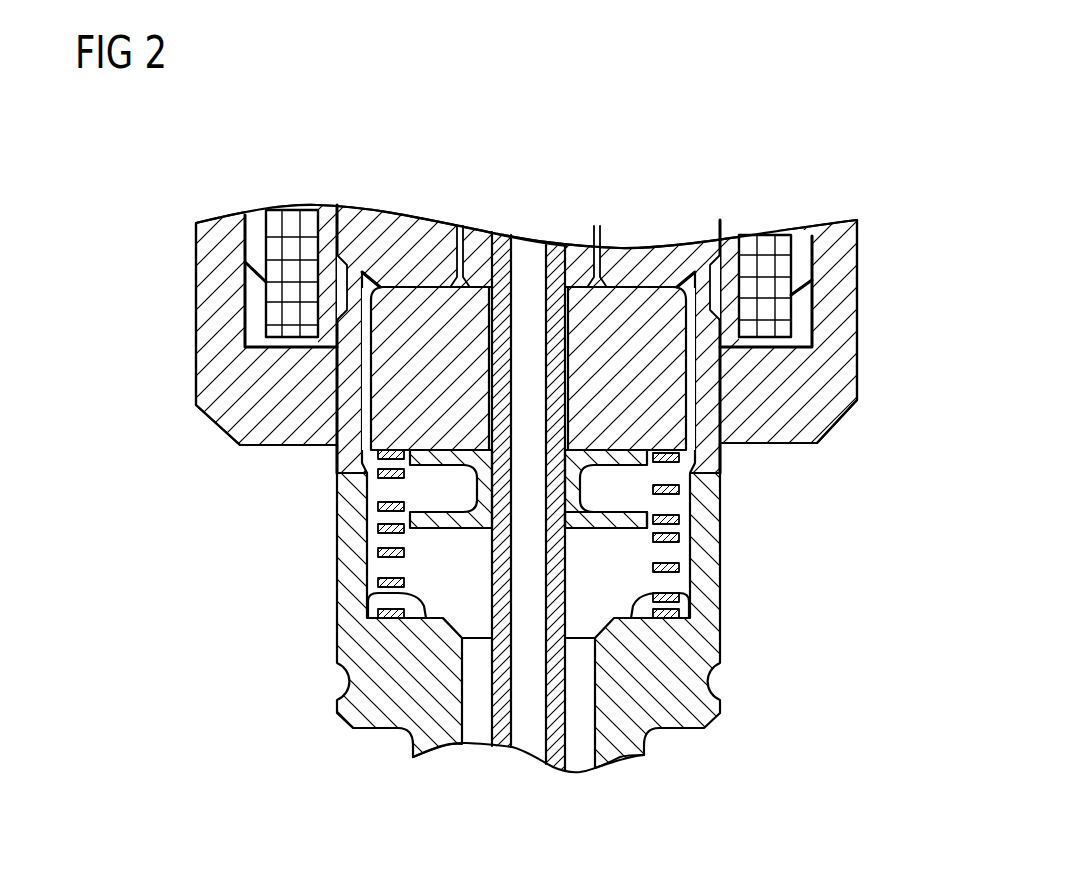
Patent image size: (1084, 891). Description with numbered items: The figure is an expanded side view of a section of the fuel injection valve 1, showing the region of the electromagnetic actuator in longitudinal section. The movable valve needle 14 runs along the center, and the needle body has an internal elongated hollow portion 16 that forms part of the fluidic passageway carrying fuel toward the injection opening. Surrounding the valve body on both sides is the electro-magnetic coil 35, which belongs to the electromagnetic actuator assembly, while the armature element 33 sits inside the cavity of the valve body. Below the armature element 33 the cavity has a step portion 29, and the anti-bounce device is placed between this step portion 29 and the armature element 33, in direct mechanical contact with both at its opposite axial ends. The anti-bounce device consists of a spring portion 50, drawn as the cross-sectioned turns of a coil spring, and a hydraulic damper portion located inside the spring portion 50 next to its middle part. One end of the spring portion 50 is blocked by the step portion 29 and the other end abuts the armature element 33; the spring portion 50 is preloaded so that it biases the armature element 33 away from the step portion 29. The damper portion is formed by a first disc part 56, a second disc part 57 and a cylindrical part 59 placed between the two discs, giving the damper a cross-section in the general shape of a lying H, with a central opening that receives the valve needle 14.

The fuel injection valve 1 is at (857, 126).
The valve needle 14 is at (527, 736).
The hollow portion 16 is at (568, 262).
The step portion 29 is at (370, 600).
The armature element 33 is at (415, 311).
The electro-magnetic coil 35 is at (287, 231).
The spring portion 50 is at (380, 527).
The first disc part 56 is at (608, 462).
The second disc part 57 is at (610, 525).
The cylindrical part 59 is at (483, 483).